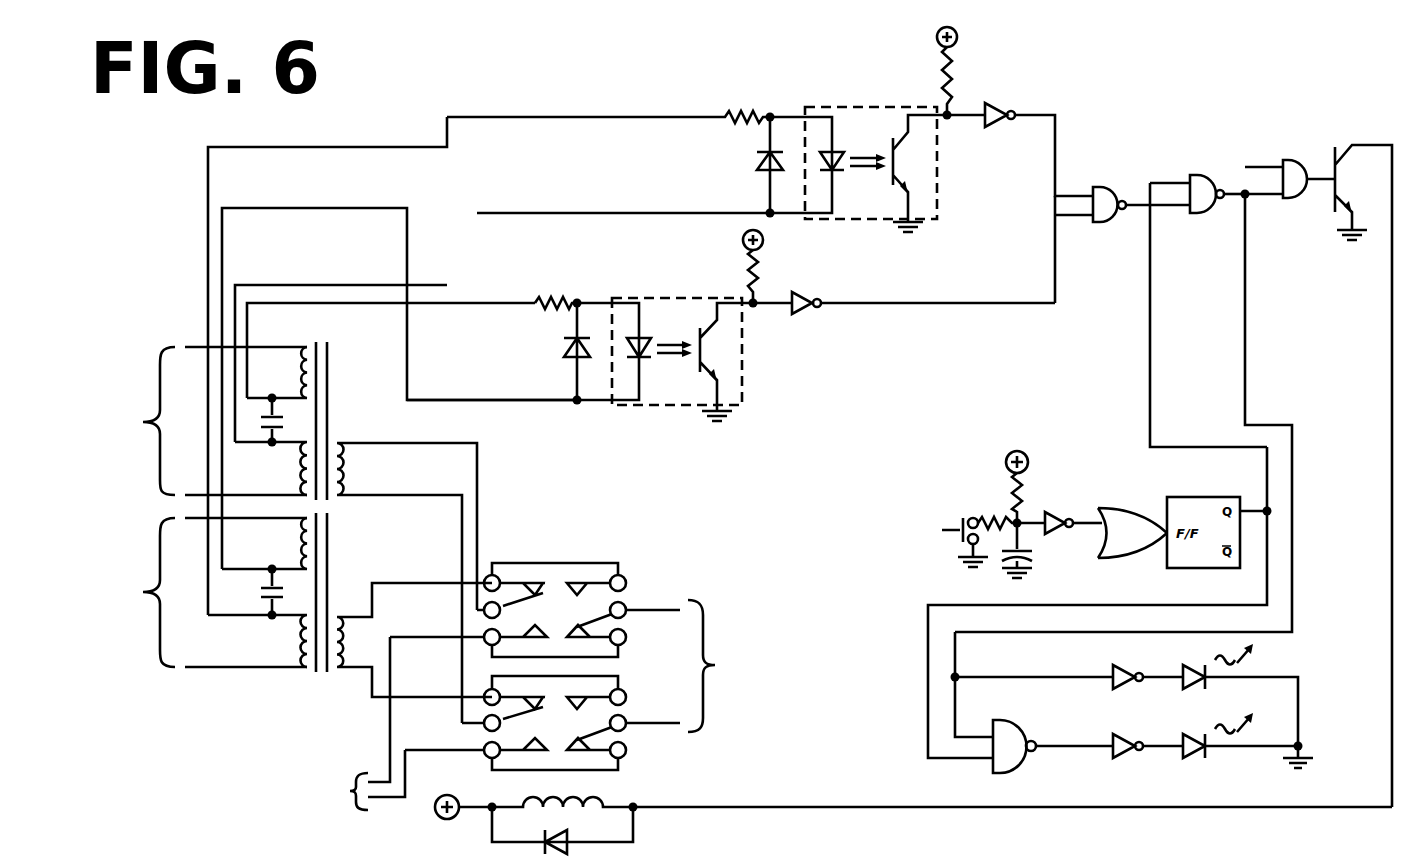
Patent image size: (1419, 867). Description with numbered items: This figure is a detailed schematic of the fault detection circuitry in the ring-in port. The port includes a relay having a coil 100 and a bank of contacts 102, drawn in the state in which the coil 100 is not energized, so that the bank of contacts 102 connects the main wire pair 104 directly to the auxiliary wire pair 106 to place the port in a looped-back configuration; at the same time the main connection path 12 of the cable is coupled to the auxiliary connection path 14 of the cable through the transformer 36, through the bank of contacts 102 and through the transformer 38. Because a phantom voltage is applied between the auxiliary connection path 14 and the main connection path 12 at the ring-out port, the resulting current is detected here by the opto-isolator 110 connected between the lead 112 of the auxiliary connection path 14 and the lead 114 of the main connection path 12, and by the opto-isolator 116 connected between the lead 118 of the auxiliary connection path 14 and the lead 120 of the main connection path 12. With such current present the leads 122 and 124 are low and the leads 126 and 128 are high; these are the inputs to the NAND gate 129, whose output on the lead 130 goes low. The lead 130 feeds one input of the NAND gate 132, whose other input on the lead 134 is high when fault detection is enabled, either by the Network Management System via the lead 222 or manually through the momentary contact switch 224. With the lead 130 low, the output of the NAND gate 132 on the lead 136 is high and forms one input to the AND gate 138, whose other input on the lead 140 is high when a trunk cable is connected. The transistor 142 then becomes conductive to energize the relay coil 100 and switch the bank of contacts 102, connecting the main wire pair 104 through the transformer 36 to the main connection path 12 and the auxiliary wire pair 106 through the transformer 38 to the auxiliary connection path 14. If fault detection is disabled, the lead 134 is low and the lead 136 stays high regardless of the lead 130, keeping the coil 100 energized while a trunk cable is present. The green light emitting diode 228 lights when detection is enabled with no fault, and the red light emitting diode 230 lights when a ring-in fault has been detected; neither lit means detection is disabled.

The main connection path 12 is at (143, 592).
The auxiliary connection path 14 is at (143, 422).
The transformer 36 is at (320, 680).
The transformer 38 is at (348, 380).
The relay coil 100 is at (605, 793).
The bank of contacts 102 is at (604, 546).
The main wire pair 104 is at (723, 666).
The auxiliary wire pair 106 is at (354, 723).
The opto-isolator 110 is at (870, 107).
The lead 112 is at (637, 115).
The lead 114 is at (660, 212).
The opto-isolator 116 is at (668, 407).
The lead 118 is at (477, 303).
The lead 120 is at (515, 400).
The lead 122 is at (967, 115).
The lead 124 is at (773, 305).
The lead 126 is at (1056, 135).
The lead 128 is at (1057, 272).
The NAND gate 129 is at (1103, 185).
The lead 130 is at (1157, 212).
The NAND gate 132 is at (1205, 214).
The lead 134 is at (1158, 180).
The lead 136 is at (1250, 197).
The AND gate 138 is at (1298, 160).
The lead 140 is at (1255, 167).
The transistor 142 is at (1345, 178).
The lead 222 is at (1100, 546).
The momentary contact switch 224 is at (963, 522).
The green light emitting diode 228 is at (1194, 751).
The red light emitting diode 230 is at (1192, 688).